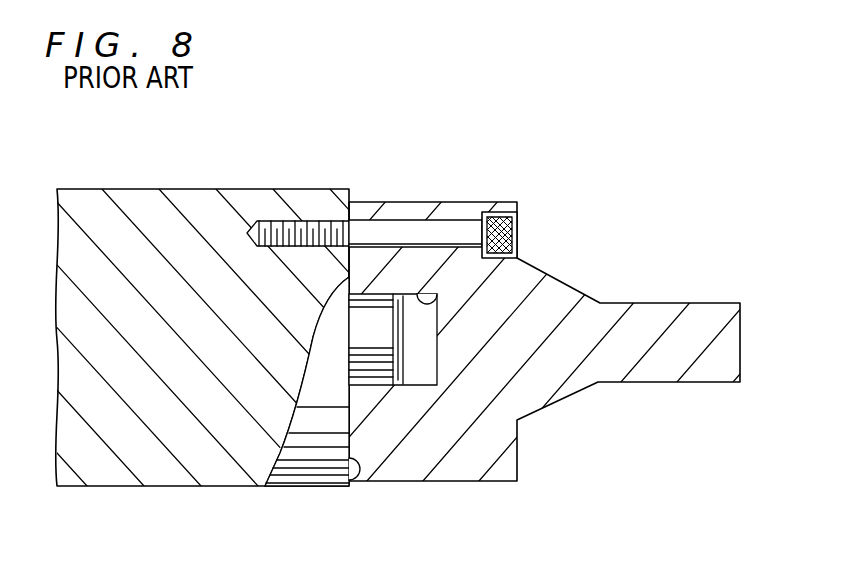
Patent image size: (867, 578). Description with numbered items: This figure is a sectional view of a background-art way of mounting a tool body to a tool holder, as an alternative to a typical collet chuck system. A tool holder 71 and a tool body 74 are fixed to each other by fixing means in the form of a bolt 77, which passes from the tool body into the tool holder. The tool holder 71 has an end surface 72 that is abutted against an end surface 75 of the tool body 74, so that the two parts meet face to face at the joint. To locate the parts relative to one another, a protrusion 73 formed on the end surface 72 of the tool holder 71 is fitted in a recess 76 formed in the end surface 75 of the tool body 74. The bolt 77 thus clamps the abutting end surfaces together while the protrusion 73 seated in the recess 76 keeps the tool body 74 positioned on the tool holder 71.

The tool holder 71 is at (150, 178).
The end surface 72 is at (362, 462).
The protrusion 73 is at (377, 368).
The tool body 74 is at (543, 421).
The end surface 75 is at (348, 447).
The recess 76 is at (423, 307).
The bolt 77 is at (458, 232).